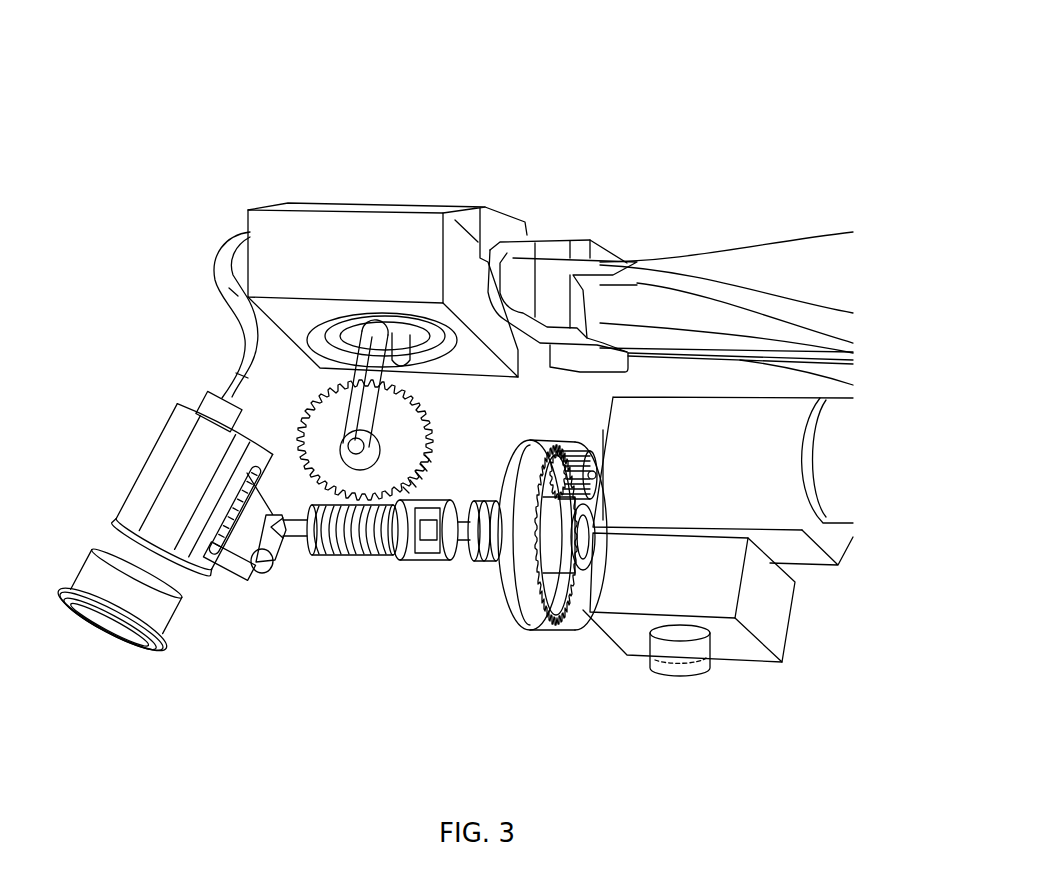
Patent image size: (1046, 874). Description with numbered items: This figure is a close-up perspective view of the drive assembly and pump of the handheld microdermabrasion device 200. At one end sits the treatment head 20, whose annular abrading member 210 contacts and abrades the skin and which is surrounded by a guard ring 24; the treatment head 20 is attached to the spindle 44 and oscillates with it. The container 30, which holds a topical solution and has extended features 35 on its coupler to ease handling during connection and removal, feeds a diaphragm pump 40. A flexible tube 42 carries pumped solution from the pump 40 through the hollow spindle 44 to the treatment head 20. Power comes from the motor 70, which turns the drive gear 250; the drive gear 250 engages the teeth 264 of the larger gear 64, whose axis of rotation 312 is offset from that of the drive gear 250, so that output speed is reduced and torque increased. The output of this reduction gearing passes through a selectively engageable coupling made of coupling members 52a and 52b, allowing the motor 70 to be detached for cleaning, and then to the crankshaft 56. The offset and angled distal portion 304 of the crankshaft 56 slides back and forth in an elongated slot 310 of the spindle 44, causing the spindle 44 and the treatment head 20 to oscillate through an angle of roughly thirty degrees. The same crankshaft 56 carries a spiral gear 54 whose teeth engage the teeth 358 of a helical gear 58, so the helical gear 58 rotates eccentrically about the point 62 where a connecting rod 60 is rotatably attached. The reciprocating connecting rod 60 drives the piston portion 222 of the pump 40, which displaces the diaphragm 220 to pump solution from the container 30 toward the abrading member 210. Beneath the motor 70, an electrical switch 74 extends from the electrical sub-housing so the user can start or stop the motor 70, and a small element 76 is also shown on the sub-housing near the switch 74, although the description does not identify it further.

The handheld microdermabrasion device 200 is at (806, 96).
The treatment head 20 is at (90, 552).
The guard ring 24 is at (157, 610).
The abrading member 210 is at (130, 628).
The container 30 is at (753, 250).
The extended features 35 is at (570, 245).
The pump 40 is at (342, 230).
The tube 42 is at (227, 240).
The spindle 44 is at (145, 480).
The coupling member 52a is at (402, 553).
The coupling member 52b is at (440, 548).
The spiral gear 54 is at (352, 548).
The crankshaft 56 is at (260, 572).
The helical gear 58 is at (407, 433).
The connecting rod 60 is at (355, 352).
The eccentric connection point 62 is at (350, 450).
The gear 64 is at (520, 613).
The motor 70 is at (805, 553).
The electrical switch 74 is at (770, 620).
The mounting peg 76 is at (695, 670).
The diaphragm 220 is at (427, 337).
The piston portion 222 is at (398, 337).
The drive gear 250 is at (583, 452).
The teeth 264 is at (572, 617).
The distal portion of crankshaft 304 is at (220, 560).
The elongated slot 310 is at (271, 553).
The axis of rotation 312 is at (555, 535).
The teeth 358 is at (423, 480).